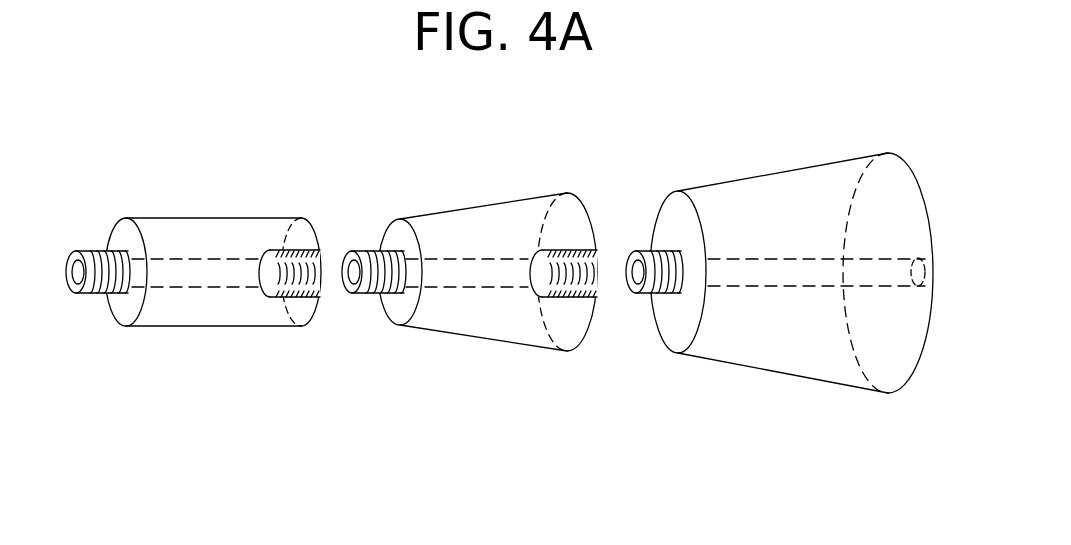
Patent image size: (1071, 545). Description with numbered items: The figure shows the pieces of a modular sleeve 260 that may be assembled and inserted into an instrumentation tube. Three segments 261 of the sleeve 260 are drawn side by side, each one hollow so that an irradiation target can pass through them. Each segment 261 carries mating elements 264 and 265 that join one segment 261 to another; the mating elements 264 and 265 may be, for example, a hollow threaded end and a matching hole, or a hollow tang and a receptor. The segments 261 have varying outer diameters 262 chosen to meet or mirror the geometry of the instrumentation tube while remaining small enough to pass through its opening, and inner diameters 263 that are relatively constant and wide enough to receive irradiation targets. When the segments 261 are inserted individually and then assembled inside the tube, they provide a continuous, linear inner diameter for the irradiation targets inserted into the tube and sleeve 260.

The sleeve 260 is at (508, 467).
The segment 261 is at (262, 327).
The outer diameter 262 is at (488, 218).
The inner diameter 263 is at (508, 300).
The mating element 264 is at (83, 250).
The mating element 265 is at (256, 268).